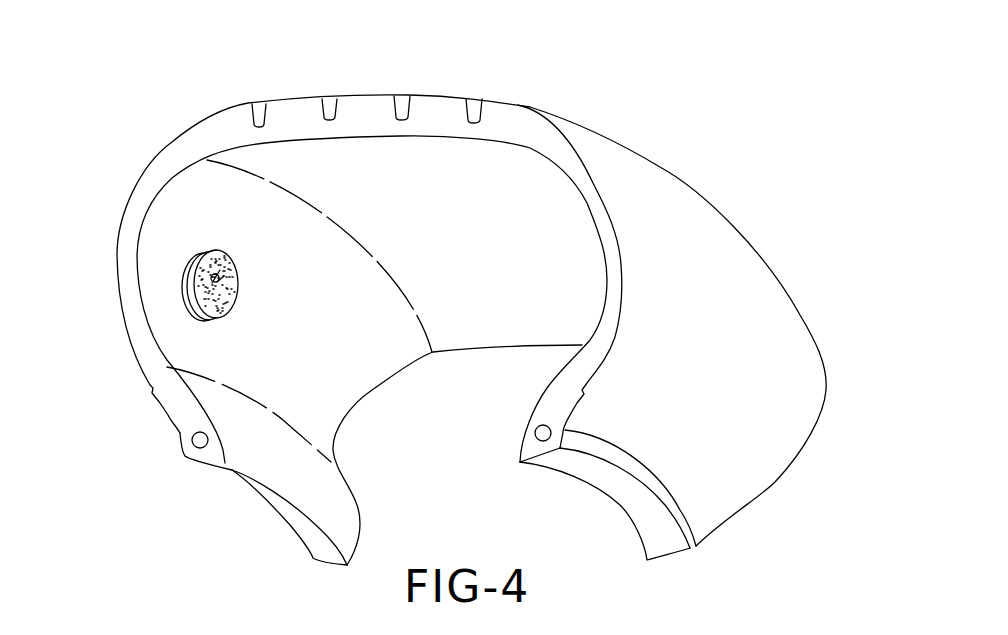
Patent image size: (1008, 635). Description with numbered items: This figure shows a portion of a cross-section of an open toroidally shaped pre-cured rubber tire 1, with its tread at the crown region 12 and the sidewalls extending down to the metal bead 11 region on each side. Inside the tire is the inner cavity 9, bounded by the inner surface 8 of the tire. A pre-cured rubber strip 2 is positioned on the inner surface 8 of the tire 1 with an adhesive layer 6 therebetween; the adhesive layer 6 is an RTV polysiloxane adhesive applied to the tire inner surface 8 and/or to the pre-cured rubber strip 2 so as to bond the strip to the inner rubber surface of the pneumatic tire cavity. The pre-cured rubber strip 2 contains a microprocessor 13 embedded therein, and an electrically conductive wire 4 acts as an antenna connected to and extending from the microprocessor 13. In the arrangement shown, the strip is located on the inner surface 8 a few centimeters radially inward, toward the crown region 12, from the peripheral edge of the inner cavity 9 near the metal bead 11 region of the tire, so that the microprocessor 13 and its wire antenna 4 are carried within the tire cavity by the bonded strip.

The pre-cured rubber tire 1 is at (743, 197).
The pre-cured annular rubber strip 2 is at (226, 314).
The electrically conductive metallic wire 4 is at (226, 274).
The adhesive layer 6 is at (184, 264).
The inner surface 8 is at (320, 390).
The inner cavity 9 is at (459, 376).
The metal bead 11 is at (200, 442).
The crown region 12 is at (430, 155).
The microprocessor 13 is at (222, 263).